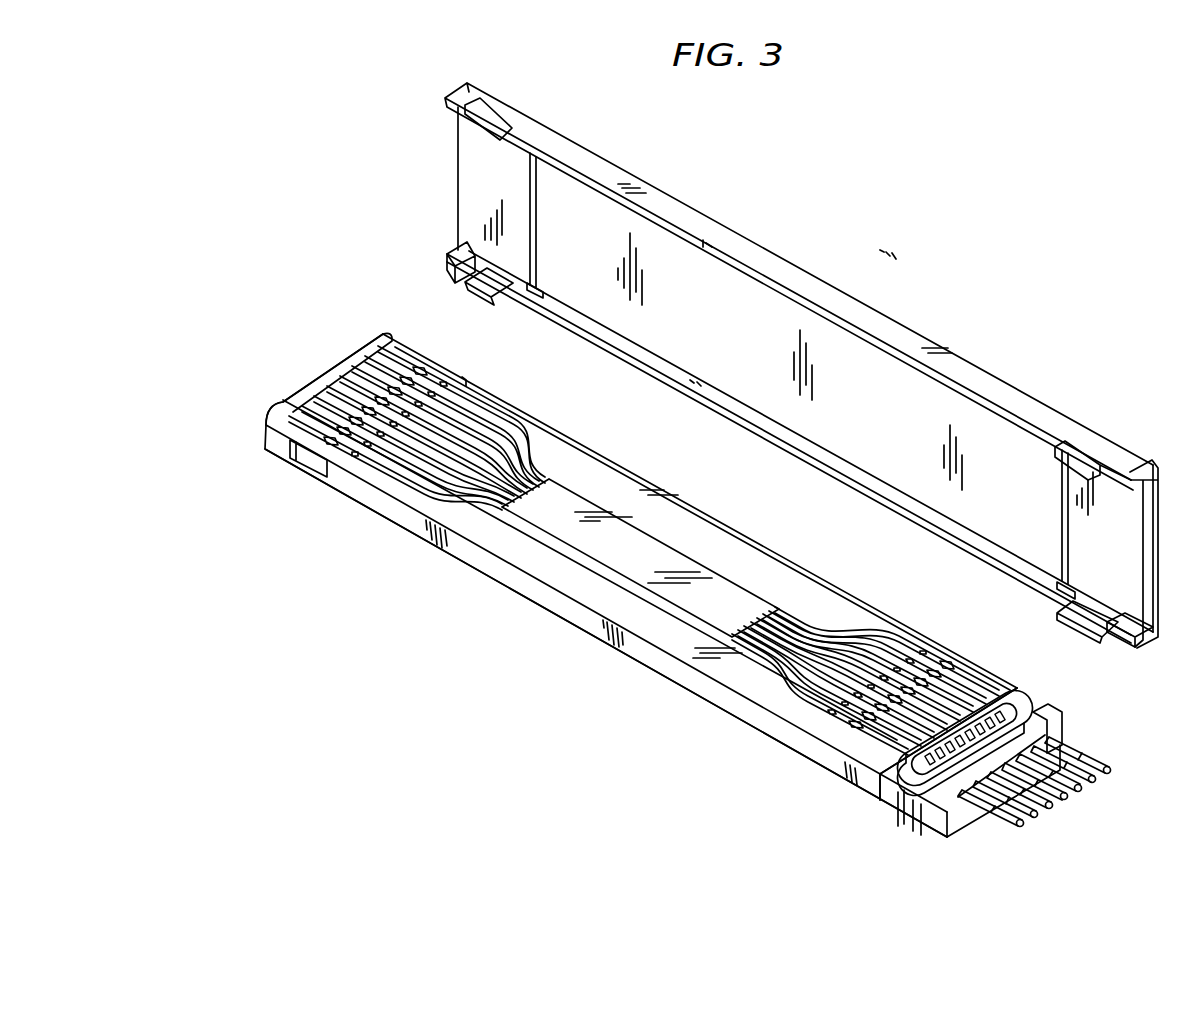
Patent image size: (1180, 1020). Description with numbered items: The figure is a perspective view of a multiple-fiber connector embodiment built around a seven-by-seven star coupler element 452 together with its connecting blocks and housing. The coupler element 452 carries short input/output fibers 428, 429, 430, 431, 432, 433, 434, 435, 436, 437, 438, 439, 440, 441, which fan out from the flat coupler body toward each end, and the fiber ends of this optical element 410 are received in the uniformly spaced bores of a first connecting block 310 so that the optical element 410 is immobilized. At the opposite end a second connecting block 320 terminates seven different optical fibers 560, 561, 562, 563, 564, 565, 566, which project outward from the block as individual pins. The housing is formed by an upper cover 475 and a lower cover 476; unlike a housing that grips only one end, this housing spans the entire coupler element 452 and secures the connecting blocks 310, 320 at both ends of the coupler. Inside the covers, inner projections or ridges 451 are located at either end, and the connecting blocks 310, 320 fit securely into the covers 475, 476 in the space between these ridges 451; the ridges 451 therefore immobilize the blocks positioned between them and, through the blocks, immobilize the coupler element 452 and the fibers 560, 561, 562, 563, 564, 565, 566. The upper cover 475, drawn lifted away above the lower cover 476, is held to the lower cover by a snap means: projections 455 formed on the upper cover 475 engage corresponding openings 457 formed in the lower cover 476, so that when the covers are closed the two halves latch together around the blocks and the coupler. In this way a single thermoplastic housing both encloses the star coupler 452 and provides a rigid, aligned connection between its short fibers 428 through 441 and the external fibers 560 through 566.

The first connecting block 310 is at (267, 410).
The second connecting block 320 is at (905, 795).
The optical element 410 is at (542, 530).
The input/output fiber 428 is at (394, 348).
The input/output fiber 429 is at (967, 683).
The input/output fiber 430 is at (362, 366).
The input/output fiber 431 is at (907, 660).
The input/output fiber 432 is at (345, 378).
The input/output fiber 433 is at (848, 656).
The input/output fiber 434 is at (330, 390).
The input/output fiber 435 is at (810, 652).
The input/output fiber 436 is at (312, 400).
The input/output fiber 437 is at (833, 685).
The input/output fiber 438 is at (290, 412).
The input/output fiber 439 is at (843, 705).
The input/output fiber 440 is at (375, 465).
The input/output fiber 441 is at (850, 735).
The inner projection or ridge 451 is at (535, 205).
The 7×7 star coupler element 452 is at (640, 547).
The projection 455 is at (487, 285).
The opening 457 is at (310, 455).
The upper cover 475 is at (824, 280).
The lower cover 476 is at (643, 667).
The optical fiber 560 is at (1107, 770).
The optical fiber 561 is at (1092, 779).
The optical fiber 562 is at (1078, 788).
The optical fiber 563 is at (1064, 796).
The optical fiber 564 is at (1049, 805).
The optical fiber 565 is at (1034, 814).
The optical fiber 566 is at (1020, 823).